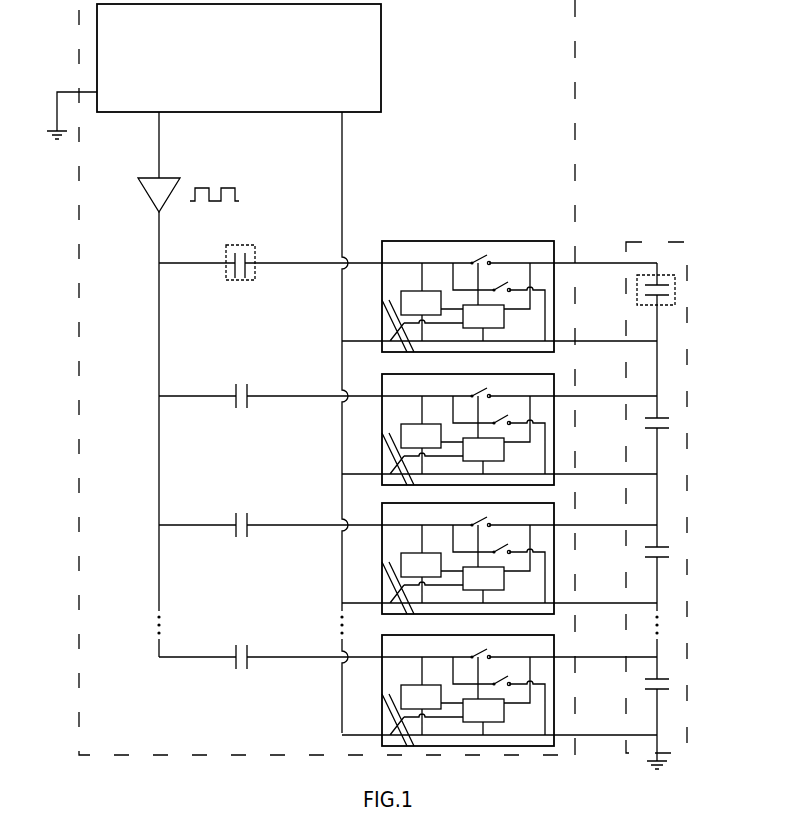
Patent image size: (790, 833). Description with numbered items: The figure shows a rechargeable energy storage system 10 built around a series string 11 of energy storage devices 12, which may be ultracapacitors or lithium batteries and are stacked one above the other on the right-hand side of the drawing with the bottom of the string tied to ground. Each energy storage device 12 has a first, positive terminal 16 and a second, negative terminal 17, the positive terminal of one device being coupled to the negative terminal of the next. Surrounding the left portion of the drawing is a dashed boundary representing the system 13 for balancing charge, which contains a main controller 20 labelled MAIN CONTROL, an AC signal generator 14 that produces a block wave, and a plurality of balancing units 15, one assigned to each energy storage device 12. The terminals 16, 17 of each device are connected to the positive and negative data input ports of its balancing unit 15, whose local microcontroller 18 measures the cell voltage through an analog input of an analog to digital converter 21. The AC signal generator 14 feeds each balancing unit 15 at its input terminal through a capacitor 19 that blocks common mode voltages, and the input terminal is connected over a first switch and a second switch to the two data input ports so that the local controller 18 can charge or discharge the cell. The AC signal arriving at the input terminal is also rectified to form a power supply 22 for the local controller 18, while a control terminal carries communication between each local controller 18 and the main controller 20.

The rechargeable energy storage system 10 is at (585, 124).
The series string 11 is at (668, 765).
The energy storage device 12 is at (656, 297).
The system for balancing charge 13 is at (328, 388).
The AC signal generator 14 is at (188, 162).
The balancing unit 15 is at (400, 241).
The first terminal 16 is at (605, 451).
The second terminal 17 is at (605, 529).
The local microcontroller 18 is at (483, 520).
The capacitor 19 is at (240, 256).
The main controller 20 is at (249, 58).
The analog to digital converter 21 is at (501, 313).
The power supply 22 is at (404, 296).